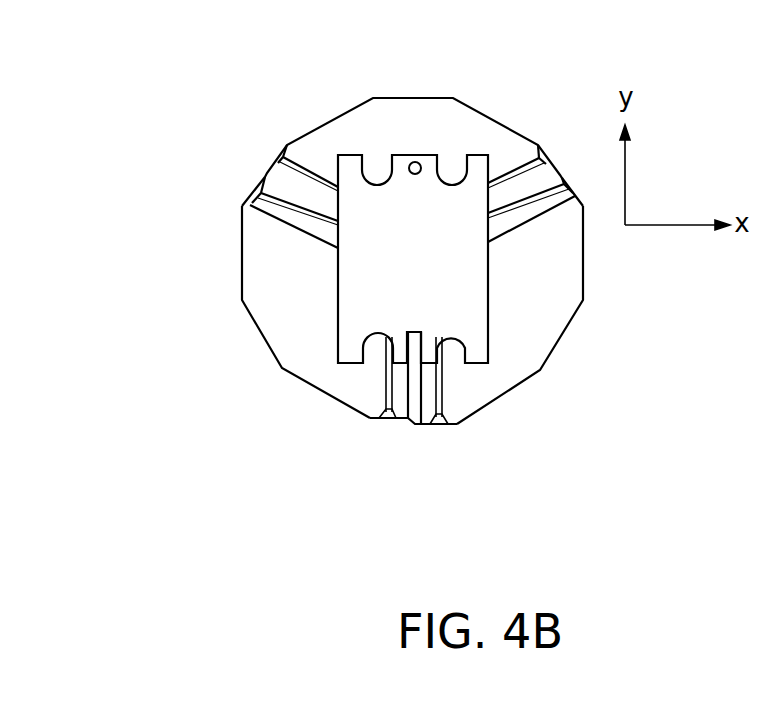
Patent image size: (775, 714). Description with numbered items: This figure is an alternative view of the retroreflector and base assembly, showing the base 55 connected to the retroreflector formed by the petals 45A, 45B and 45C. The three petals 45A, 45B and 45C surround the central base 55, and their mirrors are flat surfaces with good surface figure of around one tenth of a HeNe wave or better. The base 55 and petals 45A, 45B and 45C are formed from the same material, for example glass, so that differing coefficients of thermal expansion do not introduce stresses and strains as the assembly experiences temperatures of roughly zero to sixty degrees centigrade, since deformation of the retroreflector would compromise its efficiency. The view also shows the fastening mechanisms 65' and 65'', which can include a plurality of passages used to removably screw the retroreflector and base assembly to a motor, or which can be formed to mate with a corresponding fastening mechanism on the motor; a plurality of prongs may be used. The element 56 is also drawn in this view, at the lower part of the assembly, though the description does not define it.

The petal 45A is at (391, 98).
The petal 45B is at (565, 332).
The petal 45C is at (253, 318).
The base 55 is at (392, 277).
The bottom base plate 56 is at (405, 405).
The fastening mechanism 65' is at (464, 89).
The fastening mechanism 65'' is at (331, 408).